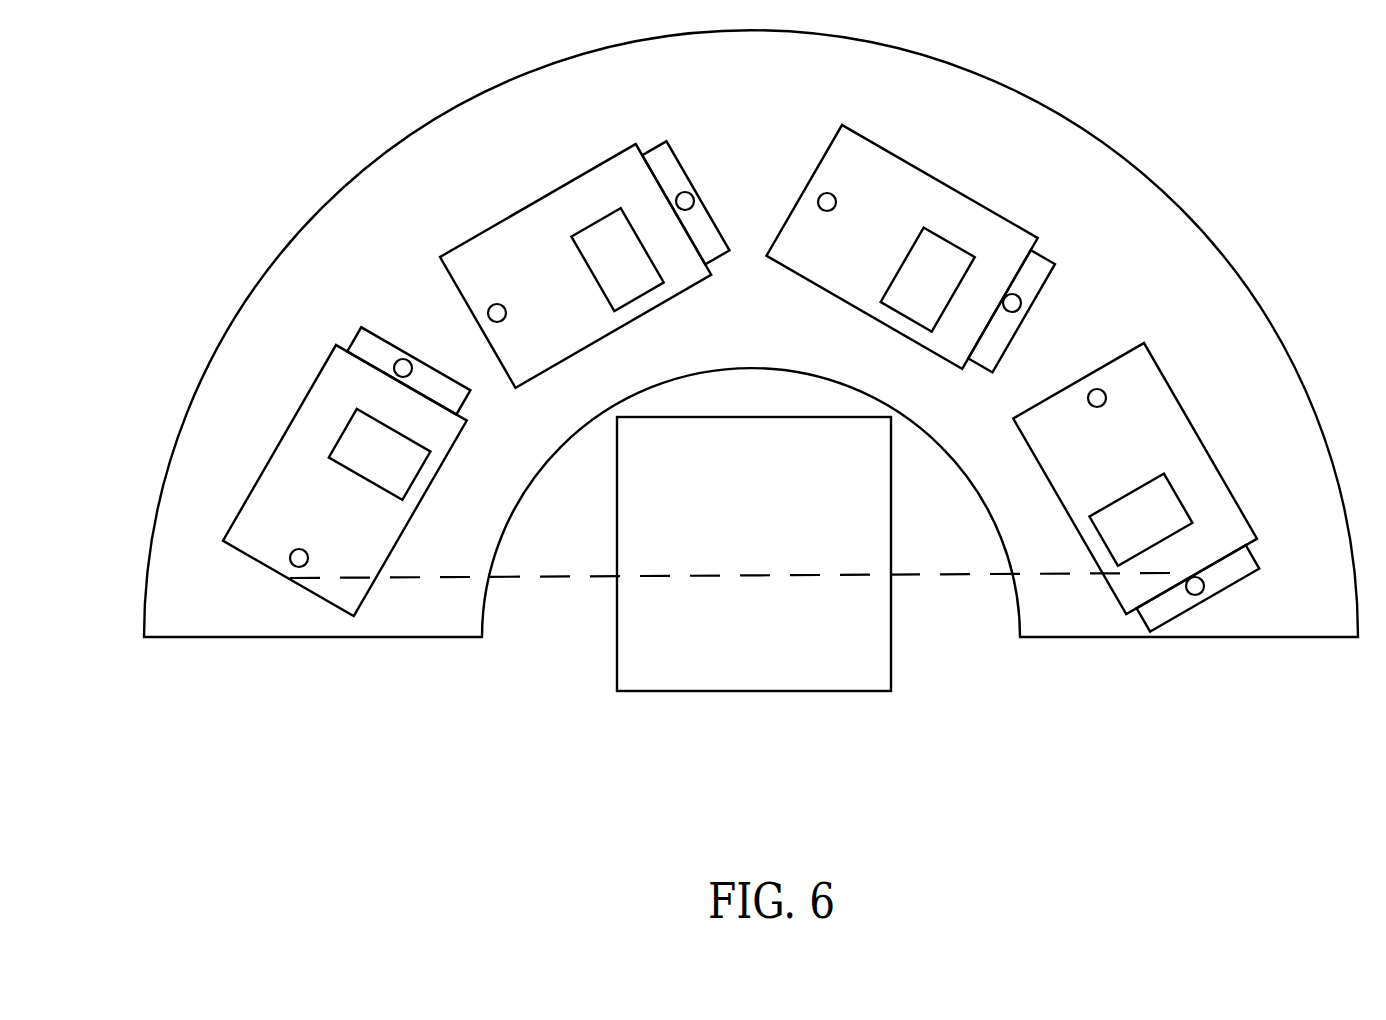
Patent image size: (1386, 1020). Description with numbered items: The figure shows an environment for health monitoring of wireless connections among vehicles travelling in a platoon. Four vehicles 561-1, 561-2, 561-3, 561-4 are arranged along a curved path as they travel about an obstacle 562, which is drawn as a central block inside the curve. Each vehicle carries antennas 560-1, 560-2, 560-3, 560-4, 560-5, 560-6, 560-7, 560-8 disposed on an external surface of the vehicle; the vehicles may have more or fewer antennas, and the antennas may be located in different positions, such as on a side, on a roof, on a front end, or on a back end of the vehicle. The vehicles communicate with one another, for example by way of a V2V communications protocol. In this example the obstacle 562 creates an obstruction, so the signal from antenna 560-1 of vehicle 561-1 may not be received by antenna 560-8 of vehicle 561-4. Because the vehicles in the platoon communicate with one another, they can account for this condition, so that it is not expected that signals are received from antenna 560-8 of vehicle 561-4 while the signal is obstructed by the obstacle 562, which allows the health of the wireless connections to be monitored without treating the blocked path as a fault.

The antenna 560-1 is at (290, 553).
The antenna 560-2 is at (397, 358).
The antenna 560-3 is at (488, 310).
The antenna 560-4 is at (693, 195).
The antenna 560-5 is at (836, 197).
The antenna 560-6 is at (1023, 307).
The antenna 560-7 is at (1106, 399).
The antenna 560-8 is at (1203, 587).
The vehicle 561-1 is at (283, 462).
The vehicle 561-2 is at (560, 205).
The vehicle 561-3 is at (957, 216).
The vehicle 561-4 is at (1207, 472).
The obstacle 562 is at (891, 670).